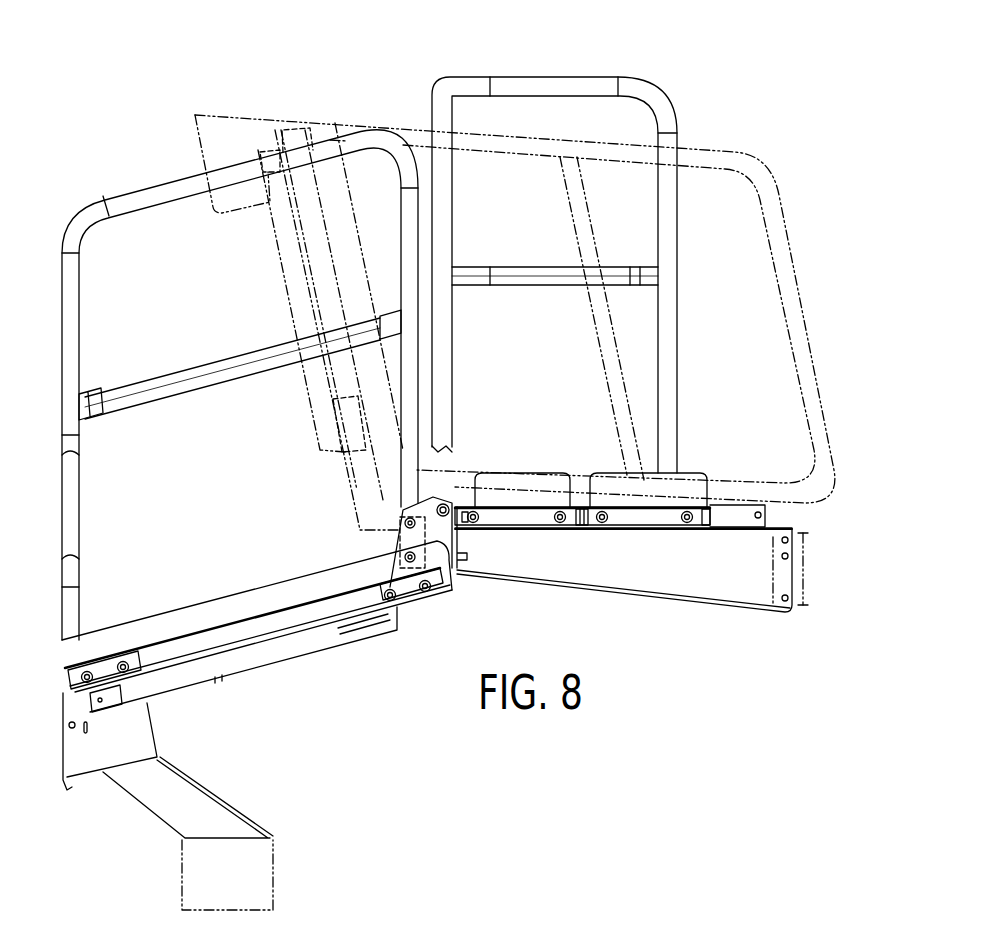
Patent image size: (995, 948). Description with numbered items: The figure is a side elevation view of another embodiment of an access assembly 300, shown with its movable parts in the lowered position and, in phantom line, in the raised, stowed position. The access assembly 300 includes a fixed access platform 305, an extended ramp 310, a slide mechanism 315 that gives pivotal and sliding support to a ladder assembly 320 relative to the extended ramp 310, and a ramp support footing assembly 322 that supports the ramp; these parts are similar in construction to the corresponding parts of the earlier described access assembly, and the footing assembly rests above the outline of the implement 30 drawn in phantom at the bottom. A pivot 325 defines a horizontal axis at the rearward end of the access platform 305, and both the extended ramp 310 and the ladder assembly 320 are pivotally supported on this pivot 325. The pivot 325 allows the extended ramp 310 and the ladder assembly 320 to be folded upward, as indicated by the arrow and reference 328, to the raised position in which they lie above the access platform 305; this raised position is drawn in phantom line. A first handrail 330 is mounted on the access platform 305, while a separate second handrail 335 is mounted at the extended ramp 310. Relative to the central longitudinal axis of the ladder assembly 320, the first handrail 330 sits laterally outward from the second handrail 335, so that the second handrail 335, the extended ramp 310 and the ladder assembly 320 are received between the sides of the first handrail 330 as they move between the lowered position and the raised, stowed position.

The vehicle 30 is at (285, 895).
The access assembly 300 is at (690, 683).
The access platform 305 is at (563, 455).
The extended ramp 310 is at (457, 373).
The slide mechanism 315 is at (408, 616).
The ladder assembly 320 is at (241, 690).
The ramp support footing assembly 322 is at (247, 801).
The pivot 325 is at (457, 580).
The folding upward 328 is at (277, 540).
The first handrail 330 is at (588, 64).
The second handrail 335 is at (118, 176).